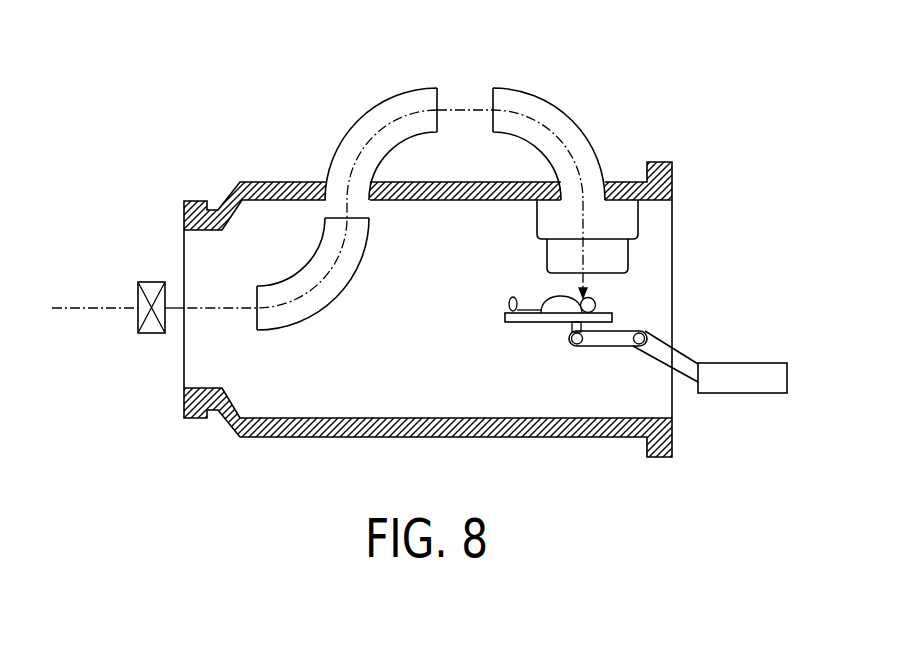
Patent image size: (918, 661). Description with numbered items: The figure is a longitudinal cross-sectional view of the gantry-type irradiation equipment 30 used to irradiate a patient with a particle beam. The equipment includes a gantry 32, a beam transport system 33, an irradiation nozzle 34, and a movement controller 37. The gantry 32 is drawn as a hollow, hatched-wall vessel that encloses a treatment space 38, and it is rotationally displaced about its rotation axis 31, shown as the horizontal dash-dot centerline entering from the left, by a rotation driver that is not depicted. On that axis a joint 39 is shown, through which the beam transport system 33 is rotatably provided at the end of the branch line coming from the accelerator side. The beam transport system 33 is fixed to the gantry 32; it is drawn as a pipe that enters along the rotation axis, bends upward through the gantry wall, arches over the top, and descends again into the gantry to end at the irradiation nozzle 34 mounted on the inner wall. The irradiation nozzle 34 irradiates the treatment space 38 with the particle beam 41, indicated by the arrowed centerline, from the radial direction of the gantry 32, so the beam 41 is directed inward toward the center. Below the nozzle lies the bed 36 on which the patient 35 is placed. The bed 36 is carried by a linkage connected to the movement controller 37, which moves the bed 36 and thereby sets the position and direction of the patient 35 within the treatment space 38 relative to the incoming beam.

The gantry-type irradiation equipment 30 is at (167, 116).
The rotation axis 31 is at (100, 307).
The gantry 32 is at (264, 182).
The beam transport system 33 is at (553, 101).
The irradiation nozzle 34 is at (638, 215).
The patient 35 is at (504, 305).
The bed 36 is at (557, 322).
The movement controller 37 is at (742, 363).
The treatment space 38 is at (481, 269).
The joint 39 is at (148, 282).
The particle beam 41 is at (587, 283).